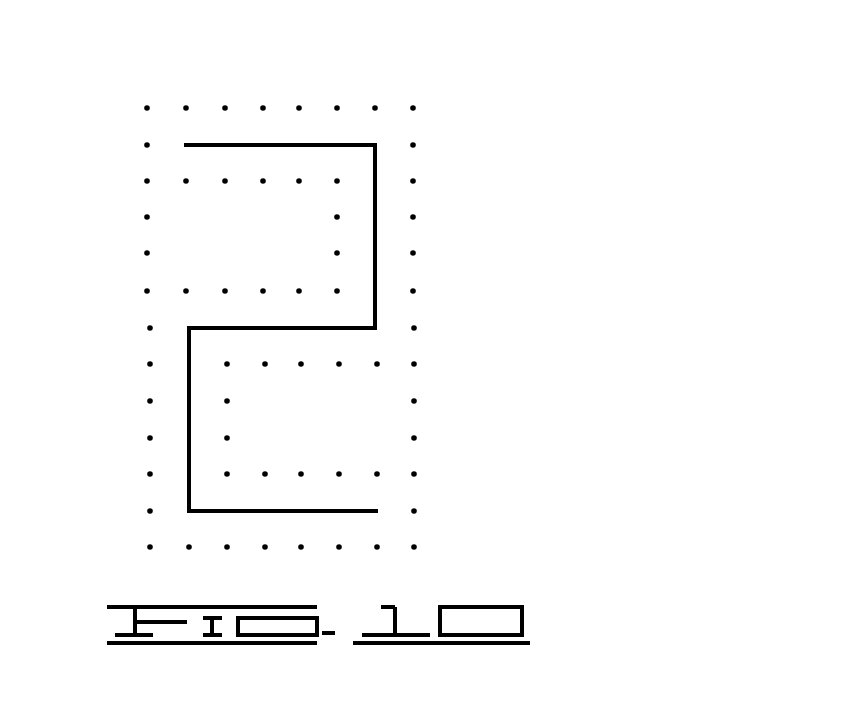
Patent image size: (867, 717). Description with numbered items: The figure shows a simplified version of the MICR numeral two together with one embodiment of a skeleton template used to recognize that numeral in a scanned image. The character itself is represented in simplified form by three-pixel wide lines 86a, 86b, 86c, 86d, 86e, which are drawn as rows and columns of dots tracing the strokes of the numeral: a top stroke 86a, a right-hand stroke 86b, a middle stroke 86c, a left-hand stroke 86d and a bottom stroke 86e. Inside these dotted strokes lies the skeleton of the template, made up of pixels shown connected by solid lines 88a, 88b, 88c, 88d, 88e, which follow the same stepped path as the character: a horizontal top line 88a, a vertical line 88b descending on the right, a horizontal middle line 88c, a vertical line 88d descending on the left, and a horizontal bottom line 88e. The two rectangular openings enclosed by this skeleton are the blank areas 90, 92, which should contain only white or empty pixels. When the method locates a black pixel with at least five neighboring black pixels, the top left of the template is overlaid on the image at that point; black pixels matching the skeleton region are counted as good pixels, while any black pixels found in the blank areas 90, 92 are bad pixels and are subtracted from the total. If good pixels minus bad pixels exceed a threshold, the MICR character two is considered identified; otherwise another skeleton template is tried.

The three-pixel wide line 86a is at (280, 88).
The three-pixel wide line 86b is at (440, 268).
The three-pixel wide line 86c is at (365, 380).
The three-pixel wide line 86d is at (140, 454).
The three-pixel wide line 86e is at (312, 562).
The solid line 88a is at (240, 145).
The solid line 88b is at (376, 237).
The solid line 88c is at (245, 326).
The solid line 88d is at (189, 423).
The solid line 88e is at (207, 512).
The blank area 90 is at (210, 257).
The blank area 92 is at (375, 438).